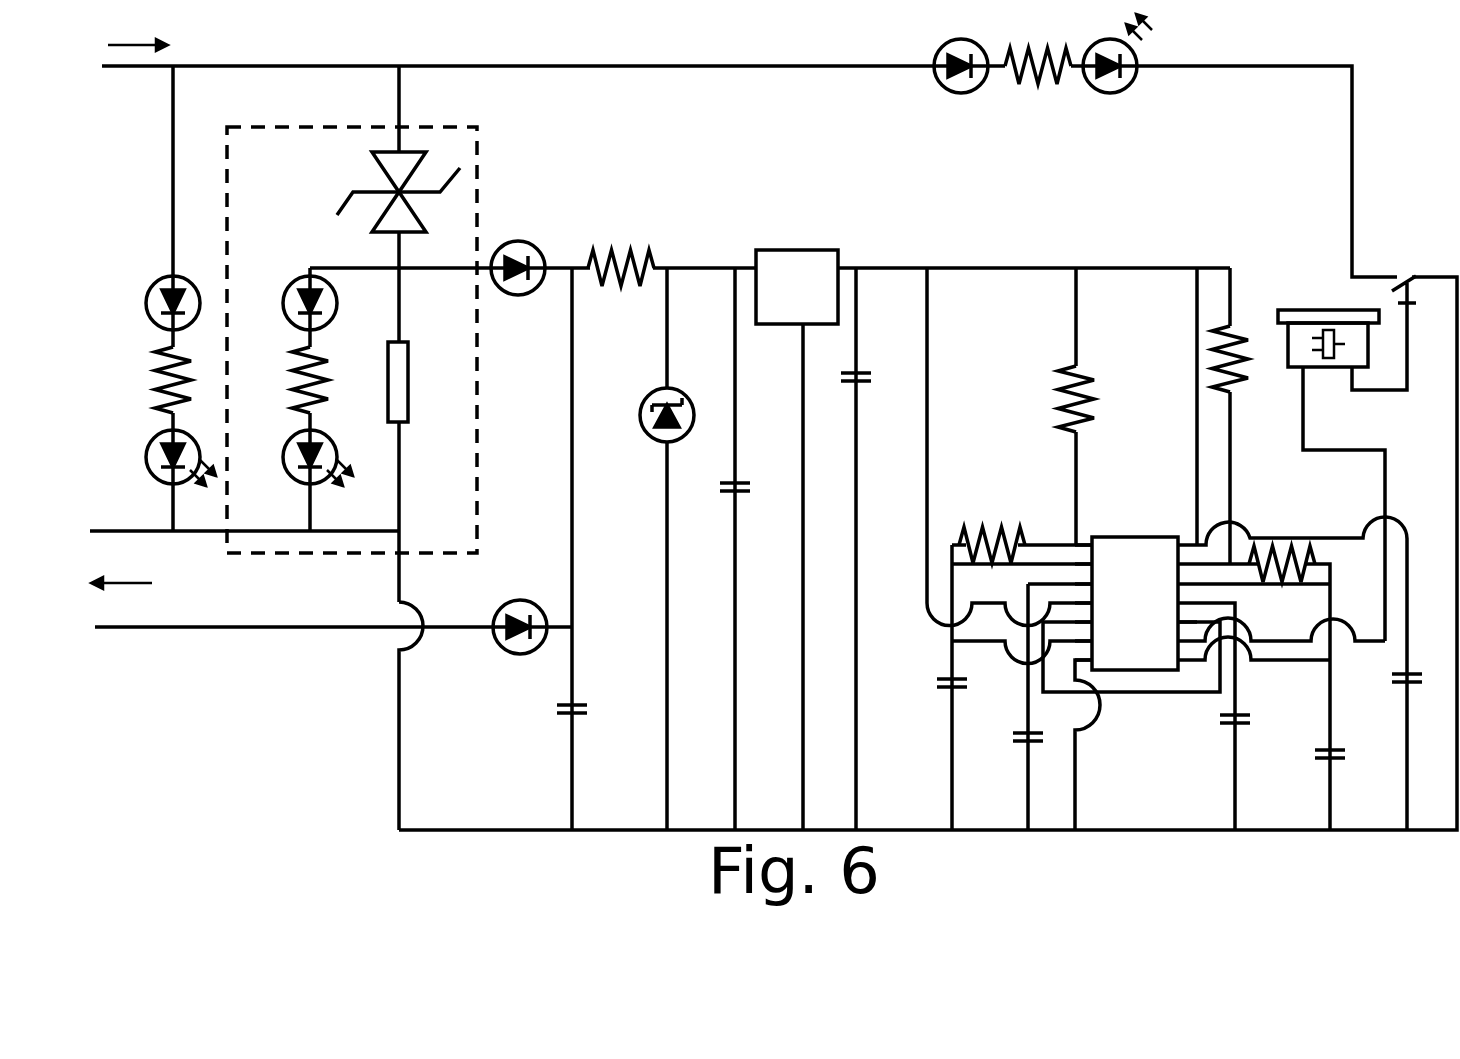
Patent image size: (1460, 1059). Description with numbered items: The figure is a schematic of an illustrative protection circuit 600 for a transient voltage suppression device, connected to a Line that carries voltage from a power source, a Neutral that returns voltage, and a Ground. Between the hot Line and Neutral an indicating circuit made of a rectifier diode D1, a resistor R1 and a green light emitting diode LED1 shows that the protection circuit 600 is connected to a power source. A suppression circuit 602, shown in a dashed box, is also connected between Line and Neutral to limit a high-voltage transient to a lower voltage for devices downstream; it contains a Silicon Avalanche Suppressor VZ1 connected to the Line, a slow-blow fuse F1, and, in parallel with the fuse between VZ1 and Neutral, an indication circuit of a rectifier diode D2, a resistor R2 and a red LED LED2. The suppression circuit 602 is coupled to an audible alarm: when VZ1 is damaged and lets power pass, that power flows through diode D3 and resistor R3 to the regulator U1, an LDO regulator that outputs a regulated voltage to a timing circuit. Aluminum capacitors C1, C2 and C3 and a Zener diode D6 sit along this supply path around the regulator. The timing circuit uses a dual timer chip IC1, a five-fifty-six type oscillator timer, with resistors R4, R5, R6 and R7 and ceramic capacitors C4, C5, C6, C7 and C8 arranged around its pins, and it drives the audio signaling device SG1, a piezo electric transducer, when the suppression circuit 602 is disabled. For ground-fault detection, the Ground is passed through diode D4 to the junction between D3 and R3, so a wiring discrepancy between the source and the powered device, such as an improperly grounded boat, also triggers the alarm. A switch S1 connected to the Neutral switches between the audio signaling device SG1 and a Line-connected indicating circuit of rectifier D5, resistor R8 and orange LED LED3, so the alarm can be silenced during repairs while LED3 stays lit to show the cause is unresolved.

The protection circuit 600 is at (773, 422).
The suppression circuit 602 is at (400, 334).
The rectifier diode D1 is at (158, 303).
The resistor R1 is at (151, 380).
The light emitting diode LED1 is at (156, 458).
The rectifier diode D2 is at (295, 303).
The resistor R2 is at (295, 380).
The LED LED2 is at (294, 458).
The Silicon Avalanche Suppressor VZ1 is at (388, 192).
The fuse F1 is at (415, 382).
The diode D3 is at (518, 283).
The diode D4 is at (520, 642).
The resistor R3 is at (621, 251).
The Zener diode D6 is at (684, 415).
The regulator U1 is at (797, 275).
The capacitor C1 is at (588, 710).
The capacitor C2 is at (751, 488).
The capacitor C3 is at (872, 377).
The rectifier D5 is at (961, 80).
The resistor R8 is at (1038, 86).
The LED LED3 is at (1117, 68).
The switch S1 is at (1384, 315).
The audio signaling device SG1 is at (1328, 328).
The resistor R4 is at (1244, 359).
The resistor R7 is at (1064, 399).
The resistor R6 is at (992, 537).
The resistor R5 is at (1289, 561).
The timer integrated circuit IC1 is at (1136, 592).
The capacitor C4 is at (969, 683).
The capacitor C5 is at (1044, 739).
The capacitor C6 is at (1252, 719).
The capacitor C7 is at (1348, 756).
The capacitor C8 is at (1423, 681).